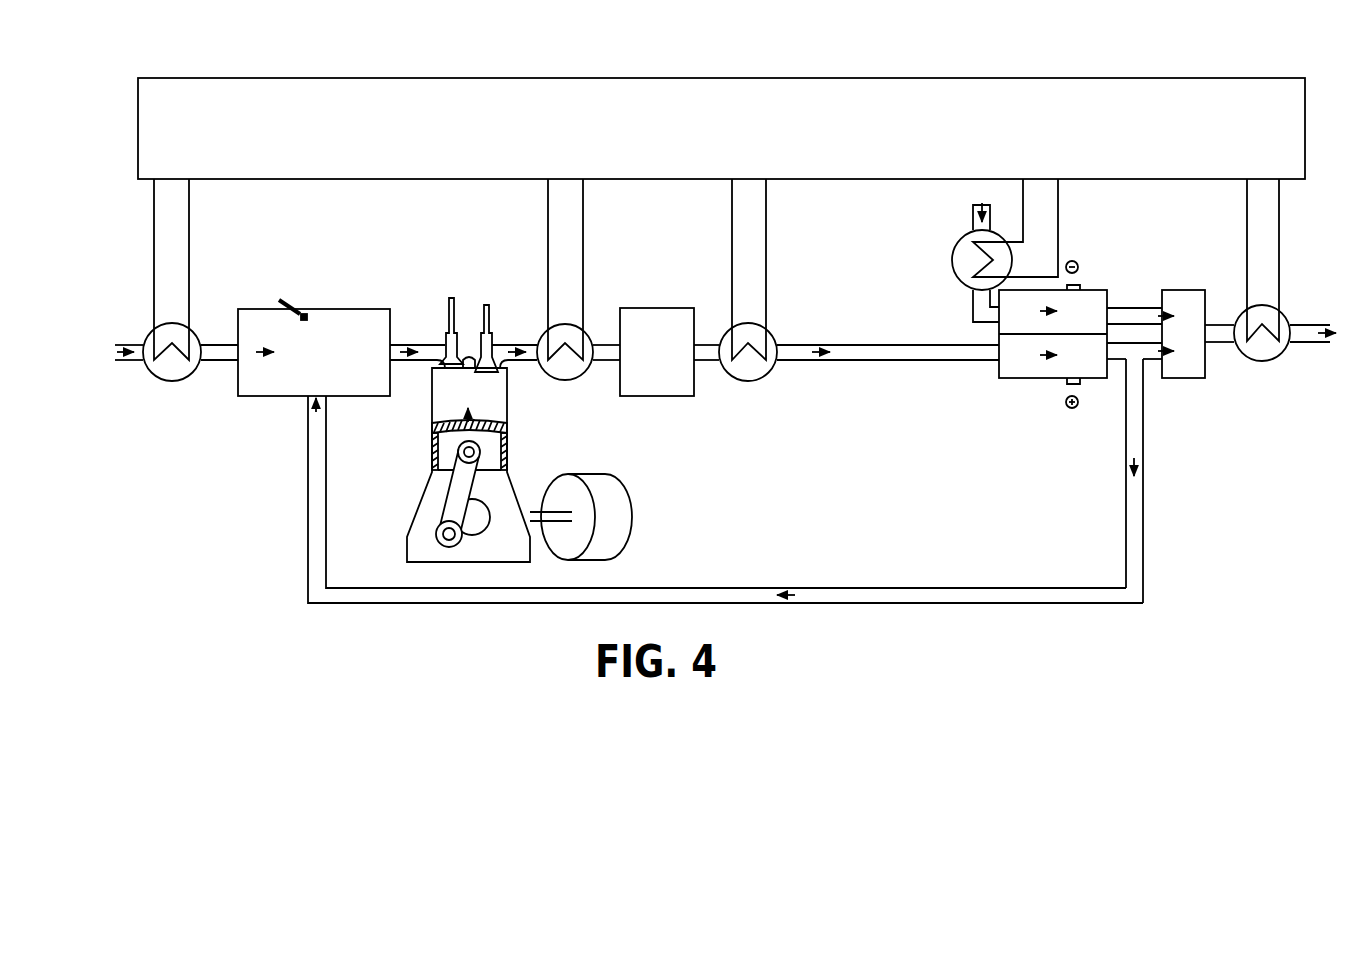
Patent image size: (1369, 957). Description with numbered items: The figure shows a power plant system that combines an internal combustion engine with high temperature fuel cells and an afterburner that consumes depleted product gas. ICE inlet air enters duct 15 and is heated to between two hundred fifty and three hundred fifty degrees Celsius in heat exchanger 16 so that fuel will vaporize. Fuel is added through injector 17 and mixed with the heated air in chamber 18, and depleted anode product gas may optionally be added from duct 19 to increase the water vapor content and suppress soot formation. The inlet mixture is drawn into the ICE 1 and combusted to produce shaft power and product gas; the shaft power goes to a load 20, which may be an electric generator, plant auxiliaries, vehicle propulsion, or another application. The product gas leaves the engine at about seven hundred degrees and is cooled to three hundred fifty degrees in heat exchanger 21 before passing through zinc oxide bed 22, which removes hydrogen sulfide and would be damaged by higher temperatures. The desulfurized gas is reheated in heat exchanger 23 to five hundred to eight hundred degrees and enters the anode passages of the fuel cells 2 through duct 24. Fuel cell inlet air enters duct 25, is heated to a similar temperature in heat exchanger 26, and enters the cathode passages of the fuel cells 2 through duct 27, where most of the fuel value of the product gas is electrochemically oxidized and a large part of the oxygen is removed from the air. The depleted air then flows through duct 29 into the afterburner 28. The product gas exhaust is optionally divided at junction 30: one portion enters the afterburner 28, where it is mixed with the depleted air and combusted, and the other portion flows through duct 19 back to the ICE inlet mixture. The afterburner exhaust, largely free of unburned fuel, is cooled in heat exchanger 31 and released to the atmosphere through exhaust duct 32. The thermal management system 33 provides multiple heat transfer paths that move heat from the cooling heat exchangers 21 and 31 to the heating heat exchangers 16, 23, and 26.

The ICE 1 is at (433, 432).
The fuel cells 2 is at (997, 387).
The duct 15 is at (123, 365).
The heat exchanger 16 is at (180, 333).
The injector 17 is at (290, 300).
The chamber 18 is at (282, 387).
The duct 19 is at (938, 592).
The load 20 is at (608, 488).
The heat exchanger 21 is at (583, 318).
The zinc oxide bed 22 is at (645, 312).
The heat exchanger 23 is at (753, 333).
The duct 24 is at (933, 355).
The duct 25 is at (977, 212).
The heat exchanger 26 is at (958, 263).
The duct 27 is at (975, 312).
The afterburner 28 is at (1190, 258).
The duct 29 is at (1123, 308).
The junction 30 is at (1133, 357).
The heat exchanger 31 is at (1273, 308).
The exhaust duct 32 is at (1310, 343).
The thermal management system 33 is at (644, 100).